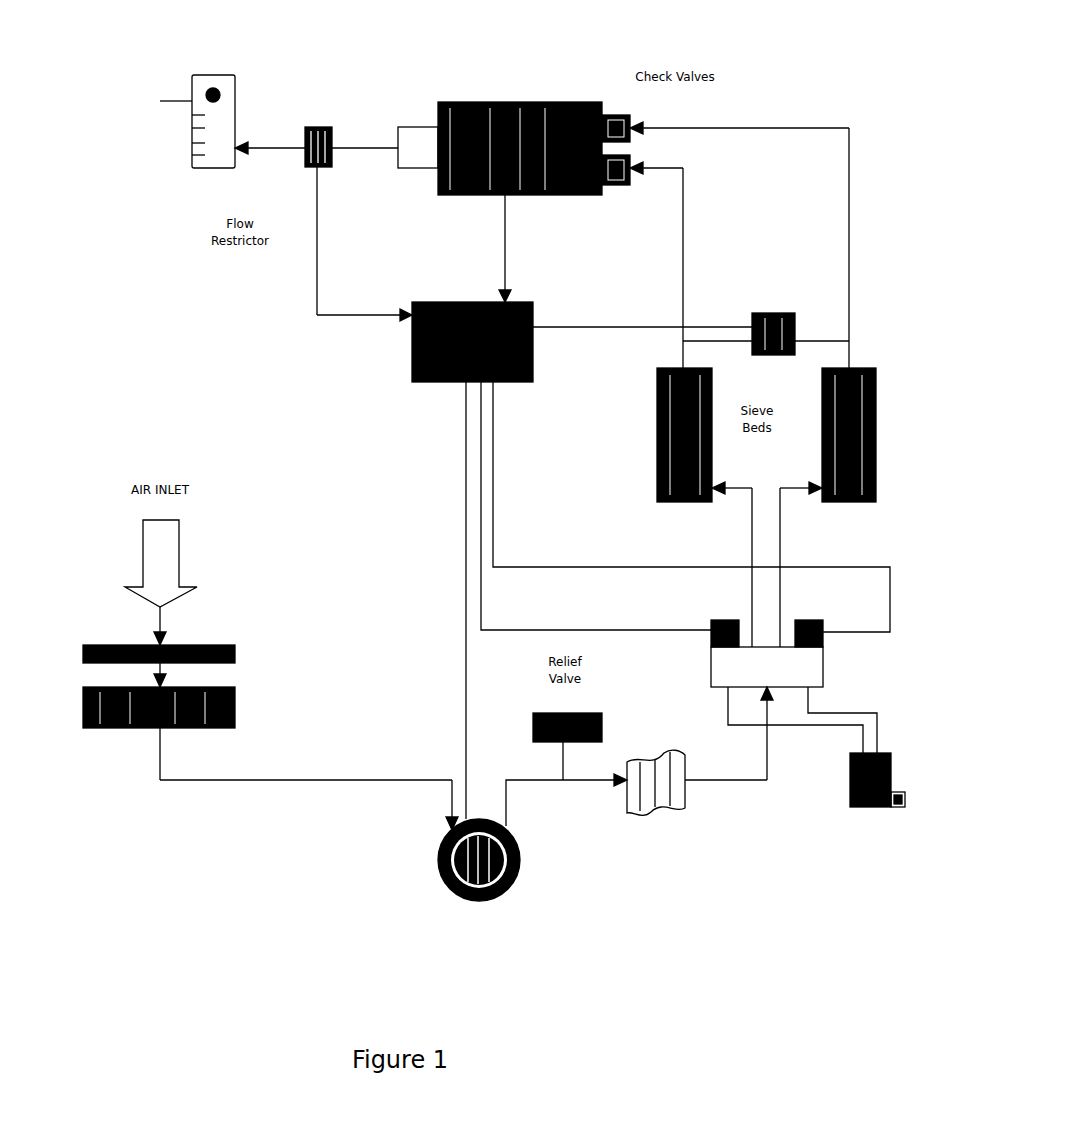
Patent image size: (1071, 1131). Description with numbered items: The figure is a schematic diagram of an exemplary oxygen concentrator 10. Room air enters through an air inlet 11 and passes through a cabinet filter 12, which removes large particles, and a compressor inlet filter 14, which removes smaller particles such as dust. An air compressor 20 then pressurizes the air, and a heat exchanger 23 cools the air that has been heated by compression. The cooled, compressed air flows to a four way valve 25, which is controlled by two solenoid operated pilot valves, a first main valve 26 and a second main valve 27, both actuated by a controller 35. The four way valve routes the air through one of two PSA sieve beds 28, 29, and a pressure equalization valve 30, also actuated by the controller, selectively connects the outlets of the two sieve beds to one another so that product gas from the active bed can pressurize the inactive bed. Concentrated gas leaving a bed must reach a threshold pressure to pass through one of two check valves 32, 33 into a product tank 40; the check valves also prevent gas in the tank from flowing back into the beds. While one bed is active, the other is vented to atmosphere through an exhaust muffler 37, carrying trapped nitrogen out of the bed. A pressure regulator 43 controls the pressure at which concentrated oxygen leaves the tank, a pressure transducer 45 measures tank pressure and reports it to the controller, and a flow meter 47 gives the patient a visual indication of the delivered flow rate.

The oxygen concentrator 10 is at (178, 341).
The air inlet 11 is at (192, 629).
The cabinet filter 12 is at (215, 642).
The compressor inlet filter 14 is at (211, 700).
The air compressor 20 is at (532, 874).
The heat exchanger 23 is at (662, 823).
The four way valve 25 is at (818, 672).
The first main valve 26 is at (706, 617).
The second main valve 27 is at (840, 618).
The first sieve bed 28 is at (704, 449).
The second sieve bed 29 is at (828, 449).
The pressure equalization valve 30 is at (774, 300).
The check valve 32 is at (642, 178).
The check valve 33 is at (725, 116).
The controller 35 is at (437, 296).
The exhaust muffler 37 is at (877, 825).
The product tank 40 is at (520, 114).
The pressure regulator 43 is at (425, 128).
The pressure transducer 45 is at (333, 157).
The flow meter 47 is at (202, 96).